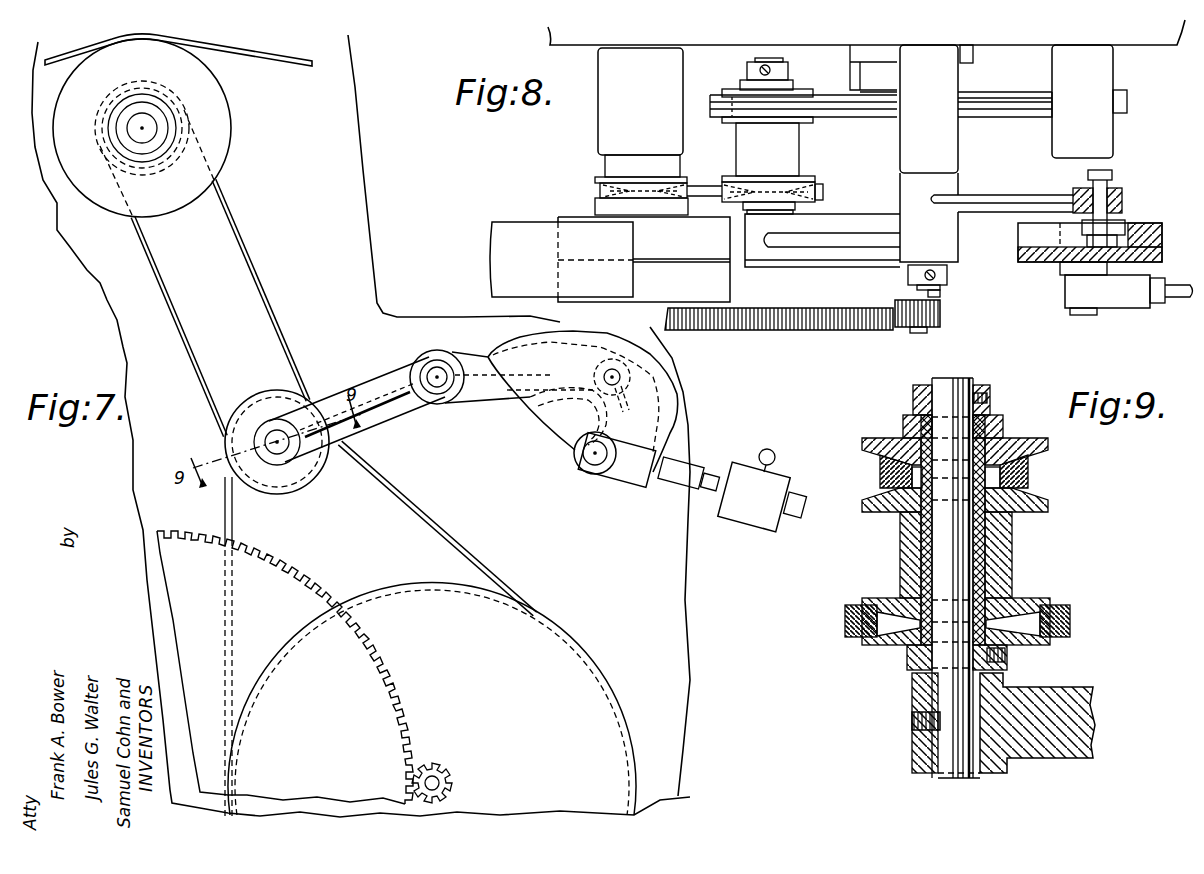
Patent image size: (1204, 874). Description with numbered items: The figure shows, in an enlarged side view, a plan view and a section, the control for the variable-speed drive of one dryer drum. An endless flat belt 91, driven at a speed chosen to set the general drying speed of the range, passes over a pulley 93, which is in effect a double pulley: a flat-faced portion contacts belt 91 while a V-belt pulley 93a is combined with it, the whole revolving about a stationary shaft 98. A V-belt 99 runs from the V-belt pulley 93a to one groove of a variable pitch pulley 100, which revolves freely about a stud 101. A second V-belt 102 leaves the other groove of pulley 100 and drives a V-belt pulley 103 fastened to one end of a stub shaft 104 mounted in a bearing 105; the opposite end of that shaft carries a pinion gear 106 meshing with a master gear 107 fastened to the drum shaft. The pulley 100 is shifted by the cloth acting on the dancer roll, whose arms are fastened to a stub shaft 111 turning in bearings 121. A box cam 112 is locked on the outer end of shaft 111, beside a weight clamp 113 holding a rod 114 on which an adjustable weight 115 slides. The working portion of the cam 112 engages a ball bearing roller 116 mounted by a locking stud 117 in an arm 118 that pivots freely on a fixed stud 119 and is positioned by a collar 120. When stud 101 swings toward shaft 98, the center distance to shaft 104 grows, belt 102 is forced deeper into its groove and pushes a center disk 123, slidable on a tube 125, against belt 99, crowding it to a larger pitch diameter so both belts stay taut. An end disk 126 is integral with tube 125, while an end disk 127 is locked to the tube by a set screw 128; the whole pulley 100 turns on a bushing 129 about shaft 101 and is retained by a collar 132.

In FIG. 7, the endless flat belt 91 is at (293, 64).
In FIG. 8, the endless flat belt 91 is at (513, 232).
In FIG. 7, the pulley 93 is at (220, 142).
In FIG. 8, the pulley 93 is at (712, 278).
In FIG. 7, the V-belt pulley 93a is at (159, 168).
In FIG. 8, the V-belt pulley 93a is at (597, 183).
In FIG. 7, the stationary shaft 98 is at (141, 118).
In FIG. 7, the V-belt 99 is at (247, 255).
In FIG. 8, the V-belt 99 is at (699, 189).
In FIG. 9, the V-belt 99 is at (845, 620).
In FIG. 7, the variable pitch pulley 100 is at (262, 388).
In FIG. 8, the variable pitch pulley 100 is at (808, 163).
In FIG. 9, the variable pitch pulley 100 is at (1036, 551).
In FIG. 7, the stud 101 is at (277, 448).
In FIG. 8, the stud 101 is at (773, 58).
In FIG. 9, the stud 101 is at (968, 378).
In FIG. 7, the V-belt 102 is at (434, 517).
In FIG. 8, the V-belt 102 is at (1002, 108).
In FIG. 9, the V-belt 102 is at (1030, 467).
In FIG. 7, the V-belt pulley 103 is at (417, 595).
In FIG. 8, the V-belt pulley 103 is at (1012, 92).
In FIG. 7, the stub shaft 104 is at (441, 783).
In FIG. 8, the stub shaft 104 is at (918, 334).
In FIG. 8, the bearing 105 is at (900, 193).
In FIG. 7, the pinion gear 106 is at (436, 767).
In FIG. 8, the pinion gear 106 is at (942, 323).
In FIG. 7, the master gear 107 is at (370, 684).
In FIG. 8, the master gear 107 is at (813, 322).
In FIG. 7, the stub shaft 111 is at (597, 459).
In FIG. 8, the stub shaft 111 is at (1083, 316).
In FIG. 7, the box cam 112 is at (660, 412).
In FIG. 8, the box cam 112 is at (1045, 258).
In FIG. 7, the weight clamp 113 is at (640, 478).
In FIG. 8, the weight clamp 113 is at (1133, 305).
In FIG. 7, the rod 114 is at (717, 478).
In FIG. 8, the rod 114 is at (1177, 287).
In FIG. 7, the adjustable weight 115 is at (758, 518).
In FIG. 7, the ball bearing roller 116 is at (630, 375).
In FIG. 8, the ball bearing roller 116 is at (1127, 217).
In FIG. 7, the locking stud 117 is at (620, 402).
In FIG. 8, the locking stud 117 is at (1120, 188).
In FIG. 7, the arm 118 is at (382, 377).
In FIG. 8, the arm 118 is at (1007, 194).
In FIG. 9, the arm 118 is at (1077, 717).
In FIG. 7, the fixed stud 119 is at (440, 385).
In FIG. 8, the fixed stud 119 is at (941, 291).
In FIG. 8, the collar 120 is at (948, 272).
In FIG. 8, the bearings 121 is at (1103, 138).
In FIG. 8, the center disk 123 is at (784, 143).
In FIG. 9, the center disk 123 is at (1001, 530).
In FIG. 9, the tube 125 is at (928, 543).
In FIG. 8, the end disk 126 is at (730, 89).
In FIG. 9, the end disk 126 is at (877, 440).
In FIG. 9, the end disk 127 is at (885, 646).
In FIG. 9, the set screw 128 is at (1007, 657).
In FIG. 9, the bushing 129 is at (980, 568).
In FIG. 8, the collar 132 is at (782, 72).
In FIG. 9, the collar 132 is at (915, 390).